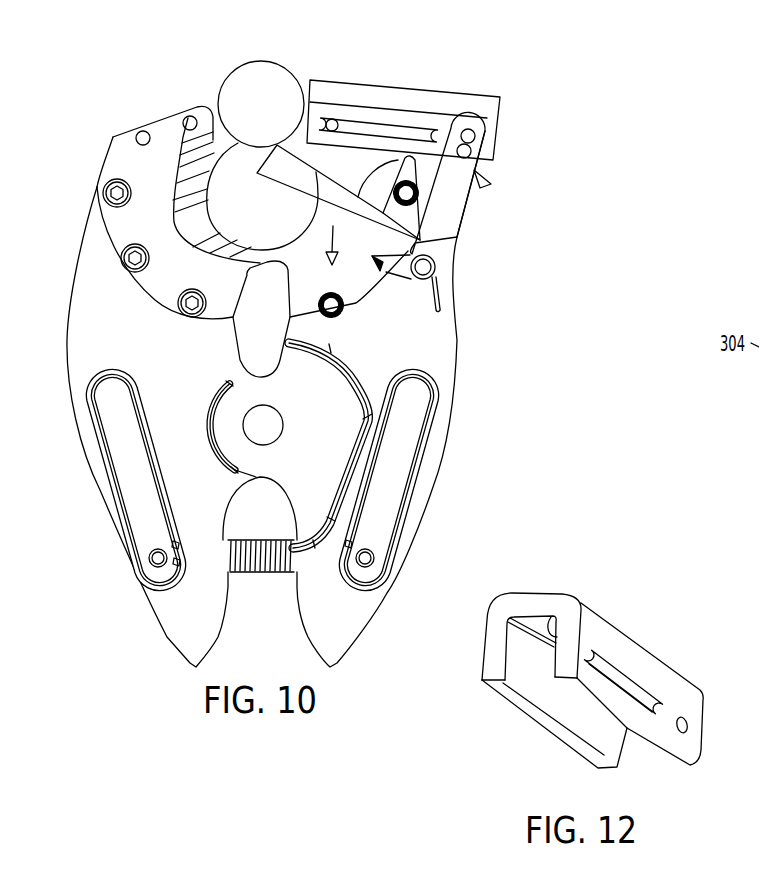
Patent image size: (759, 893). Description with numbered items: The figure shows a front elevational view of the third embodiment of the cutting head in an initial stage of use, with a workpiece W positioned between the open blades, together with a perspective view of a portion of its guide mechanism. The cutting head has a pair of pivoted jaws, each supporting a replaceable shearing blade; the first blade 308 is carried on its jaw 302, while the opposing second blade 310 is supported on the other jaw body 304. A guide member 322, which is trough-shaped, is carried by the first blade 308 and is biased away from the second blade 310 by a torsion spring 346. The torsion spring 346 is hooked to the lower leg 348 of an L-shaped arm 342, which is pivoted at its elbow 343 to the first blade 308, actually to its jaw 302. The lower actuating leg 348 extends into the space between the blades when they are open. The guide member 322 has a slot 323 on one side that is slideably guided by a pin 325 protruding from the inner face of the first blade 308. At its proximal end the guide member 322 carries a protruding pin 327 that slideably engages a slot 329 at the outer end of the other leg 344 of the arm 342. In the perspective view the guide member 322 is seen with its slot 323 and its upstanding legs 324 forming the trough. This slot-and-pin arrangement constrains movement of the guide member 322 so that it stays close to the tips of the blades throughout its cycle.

In FIG. 10, the workpiece W is at (238, 71).
In FIG. 10, the jaw 302 is at (447, 366).
In FIG. 10, the first handle body 304 is at (83, 350).
In FIG. 10, the first blade 308 is at (363, 173).
In FIG. 10, the second blade 310 is at (122, 156).
In FIG. 10, the guide member 322 is at (455, 96).
In FIG. 12, the guide member 322 is at (653, 605).
In FIG. 10, the slot 323 is at (415, 127).
In FIG. 12, the slot 323 is at (650, 693).
In FIG. 12, the leg 324 is at (556, 616).
In FIG. 10, the pin 325 is at (330, 119).
In FIG. 10, the protruding pin 327 is at (474, 138).
In FIG. 10, the slot 329 is at (469, 155).
In FIG. 10, the L-shaped arm 342 is at (441, 232).
In FIG. 10, the elbow 343 is at (436, 270).
In FIG. 10, the leg 344 is at (452, 204).
In FIG. 10, the torsion spring 346 is at (441, 302).
In FIG. 10, the lower leg 348 is at (296, 182).